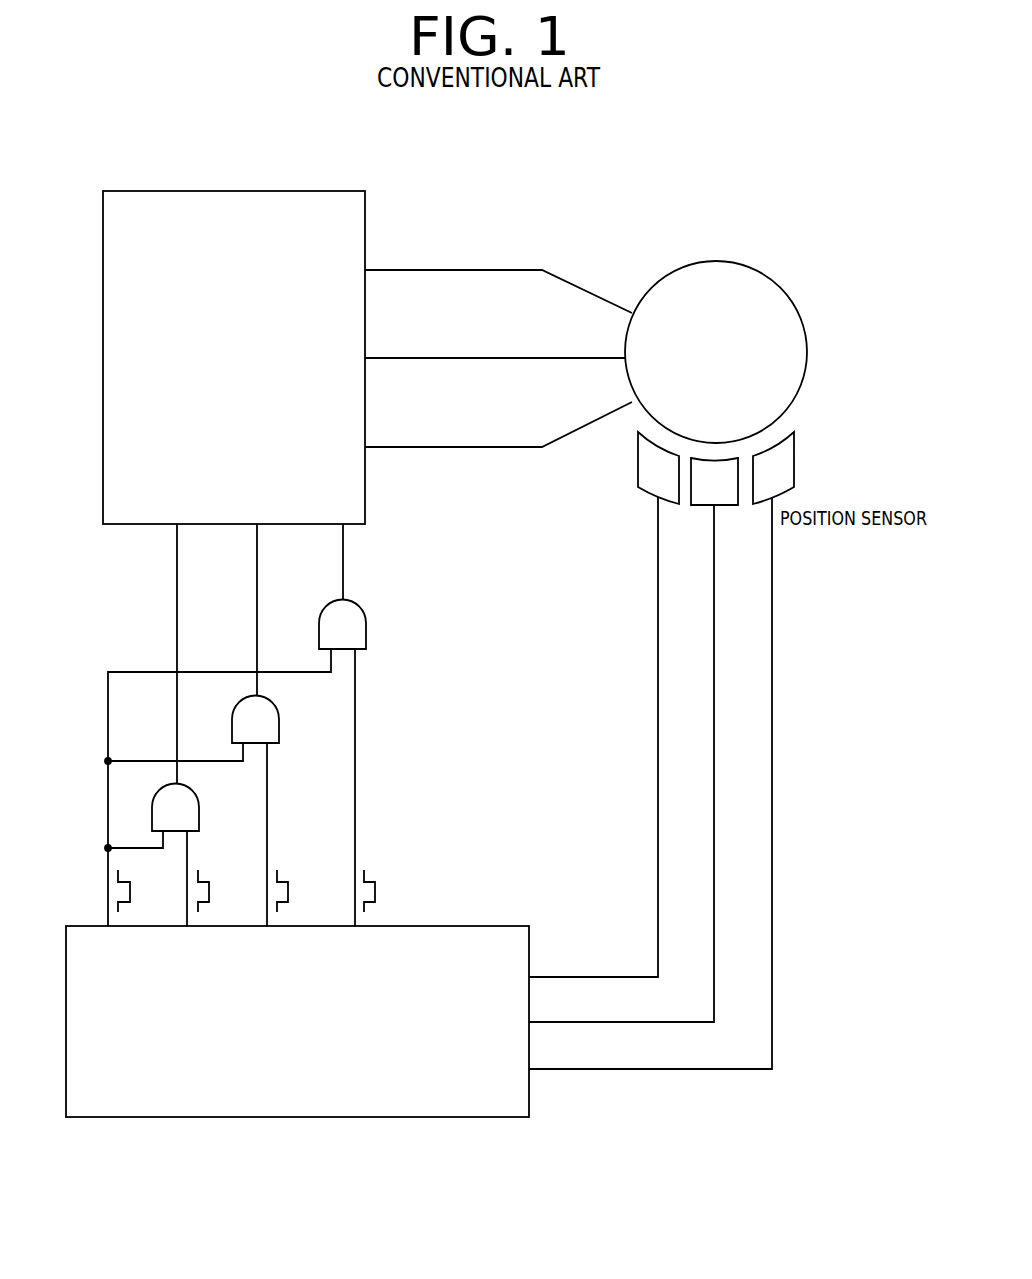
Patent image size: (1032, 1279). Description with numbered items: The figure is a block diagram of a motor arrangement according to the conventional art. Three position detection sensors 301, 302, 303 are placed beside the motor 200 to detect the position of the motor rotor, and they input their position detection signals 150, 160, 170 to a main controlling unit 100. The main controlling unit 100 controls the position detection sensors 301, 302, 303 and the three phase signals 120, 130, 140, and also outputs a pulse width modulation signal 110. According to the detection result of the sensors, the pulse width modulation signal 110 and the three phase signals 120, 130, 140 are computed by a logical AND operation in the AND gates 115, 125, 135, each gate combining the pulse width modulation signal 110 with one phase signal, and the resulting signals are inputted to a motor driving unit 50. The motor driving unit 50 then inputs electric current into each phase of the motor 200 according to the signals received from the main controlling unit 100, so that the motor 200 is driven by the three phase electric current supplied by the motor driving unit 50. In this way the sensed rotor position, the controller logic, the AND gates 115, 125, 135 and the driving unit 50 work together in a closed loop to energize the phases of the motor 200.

The motor driving unit 50 is at (296, 191).
The motor 200 is at (736, 262).
The position detection sensor 301 is at (638, 476).
The position detection sensor 302 is at (702, 507).
The position detection sensor 303 is at (792, 455).
The main controlling unit 100 is at (470, 926).
The pulse width modulation signal 110 is at (109, 897).
The three phase signal 120 is at (187, 897).
The three phase signal 130 is at (267, 872).
The three phase signal 140 is at (354, 857).
The AND gate 115 is at (200, 805).
The AND gate 125 is at (280, 717).
The AND gate 135 is at (367, 622).
The position detection signal 150 is at (582, 977).
The position detection signal 160 is at (560, 1023).
The position detection signal 170 is at (647, 1070).